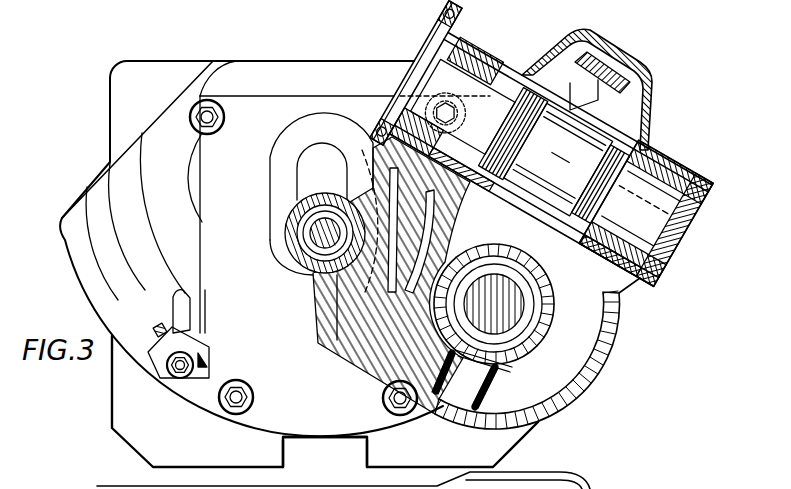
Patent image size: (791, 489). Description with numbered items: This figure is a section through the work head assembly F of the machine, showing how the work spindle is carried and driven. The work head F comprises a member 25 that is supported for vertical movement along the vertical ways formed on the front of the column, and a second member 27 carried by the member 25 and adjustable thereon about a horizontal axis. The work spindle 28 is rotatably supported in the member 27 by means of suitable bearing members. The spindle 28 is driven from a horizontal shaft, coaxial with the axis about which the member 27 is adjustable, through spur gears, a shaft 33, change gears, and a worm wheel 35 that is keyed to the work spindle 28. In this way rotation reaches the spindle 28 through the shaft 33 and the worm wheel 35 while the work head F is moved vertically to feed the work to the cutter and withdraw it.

The member 25 is at (70, 212).
The second member 27 is at (318, 408).
The work spindle 28 is at (672, 246).
The shaft 33 is at (312, 250).
The worm wheel 35 is at (647, 71).
The work head assembly F is at (126, 412).